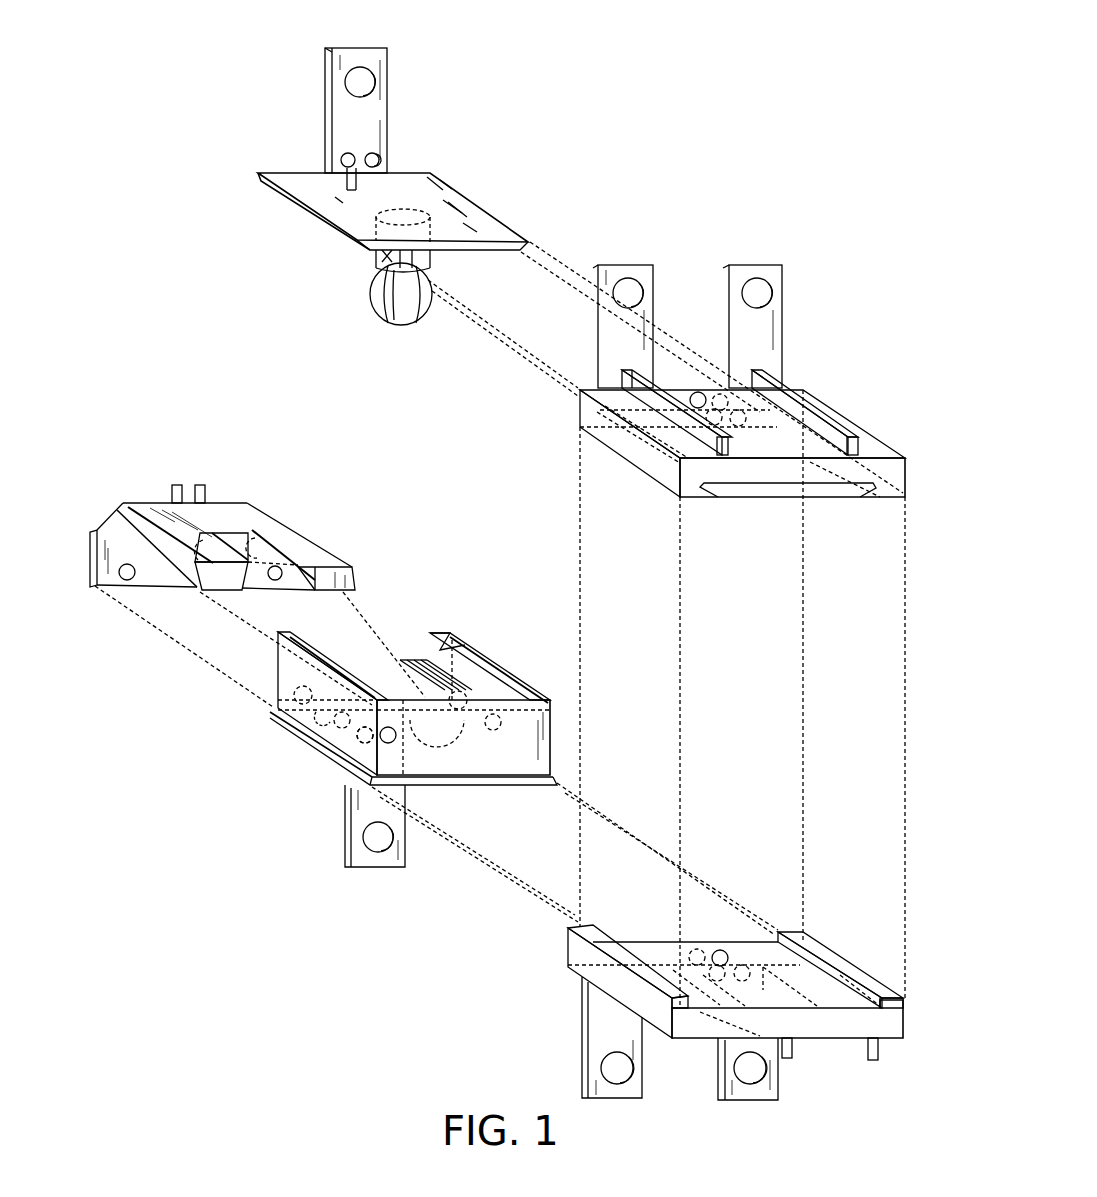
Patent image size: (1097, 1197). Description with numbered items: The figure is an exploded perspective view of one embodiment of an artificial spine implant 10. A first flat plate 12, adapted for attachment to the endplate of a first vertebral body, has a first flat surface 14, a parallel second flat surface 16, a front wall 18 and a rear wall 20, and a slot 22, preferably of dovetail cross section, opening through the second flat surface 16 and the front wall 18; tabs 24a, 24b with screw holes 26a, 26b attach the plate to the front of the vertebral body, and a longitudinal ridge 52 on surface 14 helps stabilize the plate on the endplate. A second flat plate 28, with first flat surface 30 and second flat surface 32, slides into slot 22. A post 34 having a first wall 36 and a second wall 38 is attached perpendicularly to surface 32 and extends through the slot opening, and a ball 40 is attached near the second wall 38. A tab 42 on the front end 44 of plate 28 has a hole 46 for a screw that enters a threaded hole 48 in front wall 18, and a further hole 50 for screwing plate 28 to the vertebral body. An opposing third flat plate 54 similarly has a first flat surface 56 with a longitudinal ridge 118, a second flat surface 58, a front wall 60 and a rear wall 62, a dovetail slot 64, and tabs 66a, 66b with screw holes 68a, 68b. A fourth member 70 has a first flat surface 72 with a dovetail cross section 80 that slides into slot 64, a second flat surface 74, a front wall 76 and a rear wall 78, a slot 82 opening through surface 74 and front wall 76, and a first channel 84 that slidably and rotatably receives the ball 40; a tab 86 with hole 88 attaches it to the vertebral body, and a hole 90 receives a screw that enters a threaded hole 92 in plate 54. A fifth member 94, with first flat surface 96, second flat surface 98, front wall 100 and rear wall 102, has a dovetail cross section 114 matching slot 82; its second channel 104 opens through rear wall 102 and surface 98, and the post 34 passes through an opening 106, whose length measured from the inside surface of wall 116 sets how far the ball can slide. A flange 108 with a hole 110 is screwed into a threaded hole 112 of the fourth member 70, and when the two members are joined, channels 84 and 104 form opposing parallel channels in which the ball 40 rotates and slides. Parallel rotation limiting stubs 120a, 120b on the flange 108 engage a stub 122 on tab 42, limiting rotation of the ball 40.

The artificial spine implant 10 is at (660, 192).
The first flat plate 12 is at (824, 395).
The first flat surface 14 is at (858, 440).
The second flat surface 16 is at (640, 455).
The front wall 18 is at (697, 392).
The rear wall 20 is at (738, 479).
The slot 22 is at (832, 480).
The tab 24a is at (598, 270).
The tab 24b is at (752, 262).
The screw hole 26a is at (630, 297).
The screw hole 26b is at (762, 297).
The second flat plate 28 is at (402, 172).
The first flat surface 30 is at (440, 200).
The second flat surface 32 is at (320, 214).
The post 34 is at (432, 250).
The first wall 36 is at (372, 232).
The second wall 38 is at (392, 303).
The ball 40 is at (407, 305).
The tab 42 is at (368, 54).
The front end 44 is at (310, 186).
The hole 46 is at (344, 156).
The threaded hole 48 is at (706, 398).
The hole 50 is at (355, 84).
The longitudinal ridge 52 is at (790, 406).
The third flat plate 54 is at (824, 933).
The first flat surface 56 is at (697, 1038).
The second flat surface 58 is at (836, 950).
The front wall 60 is at (568, 930).
The rear wall 62 is at (898, 1025).
The slot 64 is at (760, 940).
The tab 66a is at (580, 1035).
The tab 66b is at (780, 1072).
The screw hole 68a is at (607, 1068).
The screw hole 68b is at (752, 1074).
The fourth member 70 is at (470, 640).
The first flat surface 72 is at (446, 790).
The second flat surface 74 is at (488, 655).
The front wall 76 is at (276, 668).
The rear wall 78 is at (536, 706).
The dovetail cross section 80 is at (512, 783).
The slot 82 is at (410, 660).
The first channel 84 is at (400, 680).
The tab 86 is at (343, 805).
The hole 88 is at (370, 842).
The hole 90 is at (360, 738).
The threaded hole 92 is at (692, 950).
The fifth member 94 is at (258, 498).
The first flat surface 96 is at (196, 578).
The second flat surface 98 is at (237, 512).
The front wall 100 is at (128, 503).
The rear wall 102 is at (226, 566).
The second channel 104 is at (247, 575).
The opening 106 is at (262, 520).
The flange 108 is at (100, 572).
The hole 110 is at (128, 580).
The threaded hole 112 is at (323, 730).
The cross section 114 is at (338, 590).
The wall 116 is at (426, 698).
The longitudinal ridge 118 is at (722, 1020).
The rotation limiting stub 120a is at (172, 490).
The rotation limiting stub 120b is at (198, 485).
The stub 122 is at (350, 178).